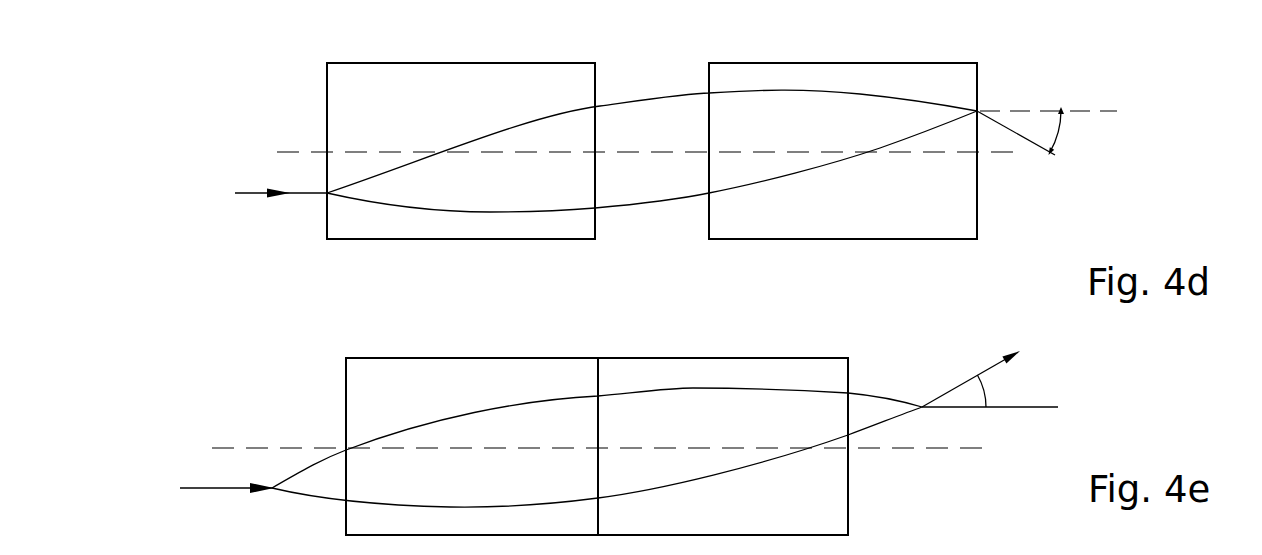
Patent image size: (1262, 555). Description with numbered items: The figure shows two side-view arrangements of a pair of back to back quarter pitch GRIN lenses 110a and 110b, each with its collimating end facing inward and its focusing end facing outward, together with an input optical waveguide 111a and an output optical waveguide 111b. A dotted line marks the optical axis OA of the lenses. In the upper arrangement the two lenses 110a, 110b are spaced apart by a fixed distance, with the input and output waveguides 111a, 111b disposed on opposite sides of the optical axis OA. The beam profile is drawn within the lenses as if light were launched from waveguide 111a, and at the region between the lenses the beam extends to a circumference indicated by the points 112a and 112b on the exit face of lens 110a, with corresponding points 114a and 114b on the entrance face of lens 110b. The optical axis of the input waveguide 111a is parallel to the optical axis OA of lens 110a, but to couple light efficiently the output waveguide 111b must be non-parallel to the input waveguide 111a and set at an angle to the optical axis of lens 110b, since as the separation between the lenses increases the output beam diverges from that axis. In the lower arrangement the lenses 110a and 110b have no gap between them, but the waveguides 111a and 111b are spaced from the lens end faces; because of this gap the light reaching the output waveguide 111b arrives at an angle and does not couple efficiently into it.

In FIG. 4D, the quarter pitch GRIN lens 110a is at (437, 78).
In FIG. 4E, the quarter pitch GRIN lens 110a is at (382, 373).
In FIG. 4D, the quarter pitch GRIN lens 110b is at (877, 67).
In FIG. 4E, the quarter pitch GRIN lens 110b is at (812, 370).
In FIG. 4D, the input optical waveguide 111a is at (327, 193).
In FIG. 4E, the input optical waveguide 111a is at (273, 487).
In FIG. 4D, the output optical waveguide 111b is at (1032, 111).
In FIG. 4E, the output optical waveguide 111b is at (1000, 408).
In FIG. 4D, the point on beam circumference 112a is at (597, 107).
In FIG. 4D, the point on beam circumference 112b is at (596, 212).
In FIG. 4D, the upper entrance surface of second optical element 114a is at (708, 93).
In FIG. 4D, the lower entrance surface of second optical element 114b is at (708, 196).
In FIG. 4D, the optical axis OA is at (277, 152).
In FIG. 4E, the optical axis OA is at (222, 447).